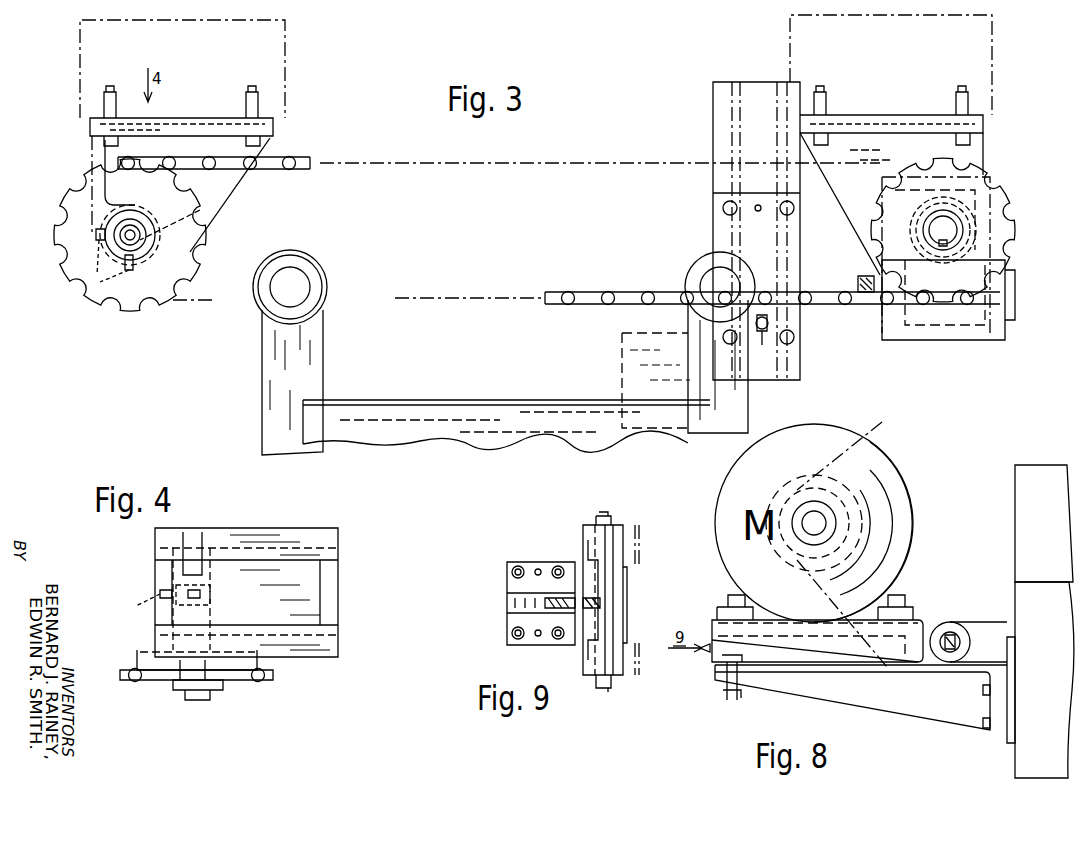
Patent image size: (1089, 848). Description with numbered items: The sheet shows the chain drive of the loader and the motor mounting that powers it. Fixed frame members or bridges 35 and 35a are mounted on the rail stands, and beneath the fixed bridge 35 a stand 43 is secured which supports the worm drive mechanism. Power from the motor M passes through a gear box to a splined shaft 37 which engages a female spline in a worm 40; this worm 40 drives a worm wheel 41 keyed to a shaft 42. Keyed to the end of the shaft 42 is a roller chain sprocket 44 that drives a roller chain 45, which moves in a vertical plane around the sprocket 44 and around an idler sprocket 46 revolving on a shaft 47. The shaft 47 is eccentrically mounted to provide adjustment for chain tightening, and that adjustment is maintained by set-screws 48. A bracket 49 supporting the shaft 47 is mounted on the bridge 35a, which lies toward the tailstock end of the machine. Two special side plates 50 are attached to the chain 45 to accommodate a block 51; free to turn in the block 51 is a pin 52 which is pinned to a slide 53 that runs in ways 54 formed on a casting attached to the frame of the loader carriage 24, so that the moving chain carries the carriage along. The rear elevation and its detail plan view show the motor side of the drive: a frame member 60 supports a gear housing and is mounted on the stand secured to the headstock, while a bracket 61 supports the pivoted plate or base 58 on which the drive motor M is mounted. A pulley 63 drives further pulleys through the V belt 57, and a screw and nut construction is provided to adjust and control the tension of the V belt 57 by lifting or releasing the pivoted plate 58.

In FIG. 3, the loader carriage 24 is at (481, 360).
In FIG. 3, the fixed bridge 35 is at (992, 55).
In FIG. 3, the fixed bridge 35a is at (285, 80).
In FIG. 3, the splined shaft 37 is at (1015, 285).
In FIG. 3, the worm 40 is at (1012, 238).
In FIG. 3, the worm wheel 41 is at (920, 220).
In FIG. 3, the shaft 42 is at (943, 231).
In FIG. 3, the stand 43 is at (870, 124).
In FIG. 3, the roller chain sprocket 44 is at (865, 225).
In FIG. 3, the roller chain 45 is at (275, 158).
In FIG. 3, the idler sprocket 46 is at (206, 218).
In FIG. 4, the idler sprocket 46 is at (233, 682).
In FIG. 3, the shaft 47 is at (142, 242).
In FIG. 4, the shaft 47 is at (210, 615).
In FIG. 3, the set-screws 48 is at (112, 259).
In FIG. 4, the set-screws 48 is at (160, 604).
In FIG. 3, the bracket 49 is at (186, 126).
In FIG. 4, the bracket 49 is at (296, 656).
In FIG. 3, the side plates 50 is at (745, 280).
In FIG. 3, the block 51 is at (768, 323).
In FIG. 3, the pin 52 is at (768, 340).
In FIG. 3, the slide 53 is at (772, 272).
In FIG. 3, the ways 54 is at (780, 135).
In FIG. 8, the V belt 57 is at (830, 470).
In FIG. 9, the pivoted plate 58 is at (618, 590).
In FIG. 8, the pivoted plate 58 is at (832, 648).
In FIG. 8, the frame member 60 is at (1060, 687).
In FIG. 9, the bracket 61 is at (527, 565).
In FIG. 8, the bracket 61 is at (986, 642).
In FIG. 8, the pulley 63 is at (800, 566).